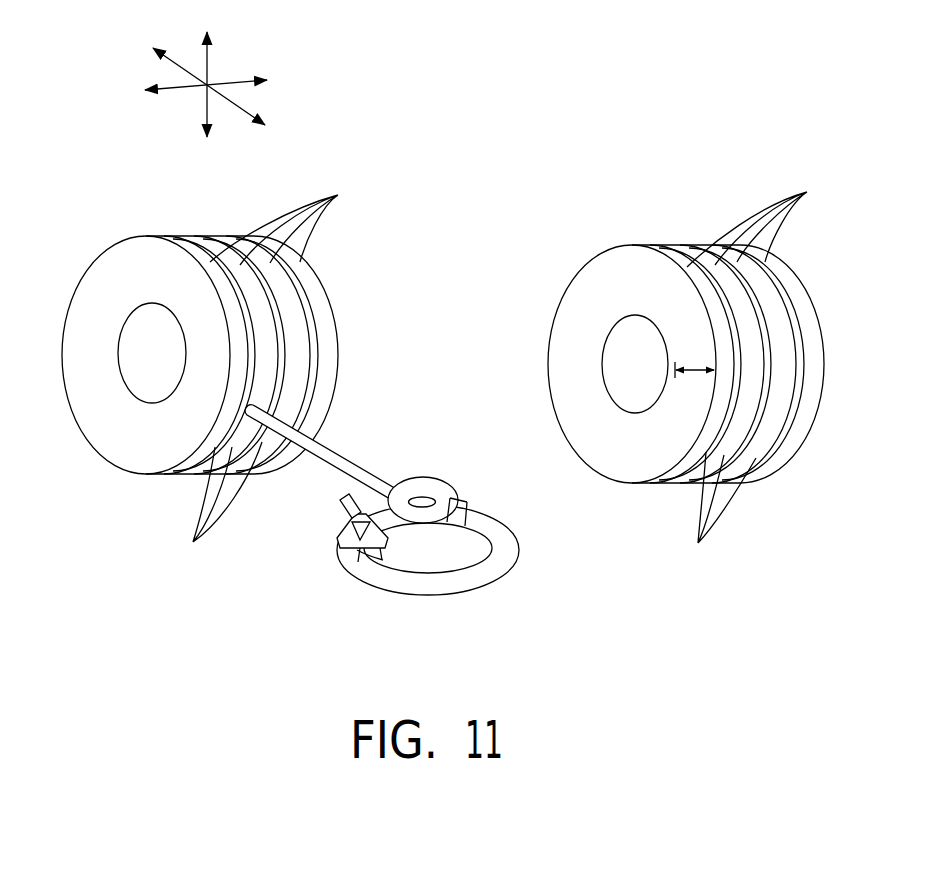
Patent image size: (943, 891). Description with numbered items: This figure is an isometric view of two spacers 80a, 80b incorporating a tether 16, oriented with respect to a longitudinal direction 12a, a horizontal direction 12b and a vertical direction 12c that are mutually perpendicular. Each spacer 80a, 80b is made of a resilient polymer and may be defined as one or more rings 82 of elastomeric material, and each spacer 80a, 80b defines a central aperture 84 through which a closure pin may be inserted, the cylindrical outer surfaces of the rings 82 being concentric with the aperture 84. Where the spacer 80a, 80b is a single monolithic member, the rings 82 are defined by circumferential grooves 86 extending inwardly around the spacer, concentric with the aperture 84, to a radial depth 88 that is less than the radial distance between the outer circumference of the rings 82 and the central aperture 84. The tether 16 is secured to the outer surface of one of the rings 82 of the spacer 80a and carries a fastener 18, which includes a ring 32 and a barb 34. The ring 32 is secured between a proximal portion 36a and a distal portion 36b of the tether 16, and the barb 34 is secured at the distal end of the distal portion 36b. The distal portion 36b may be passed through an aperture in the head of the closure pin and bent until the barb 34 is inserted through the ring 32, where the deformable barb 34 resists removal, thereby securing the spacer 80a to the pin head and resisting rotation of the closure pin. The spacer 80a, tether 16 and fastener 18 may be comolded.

The longitudinal direction 12a is at (232, 82).
The horizontal direction 12b is at (252, 113).
The vertical direction 12c is at (207, 50).
The tether 16 is at (364, 436).
The fastener 18 is at (417, 491).
The ring 32 is at (450, 492).
The barb 34 is at (340, 533).
The proximal portion 36a is at (378, 478).
The distal portion 36b is at (500, 555).
The spacer 80a is at (99, 210).
The spacer 80b is at (678, 184).
The rings 82 is at (522, 225).
The central aperture 84 is at (145, 372).
The circumferential grooves 86 is at (459, 500).
The radial depth 88 is at (690, 366).